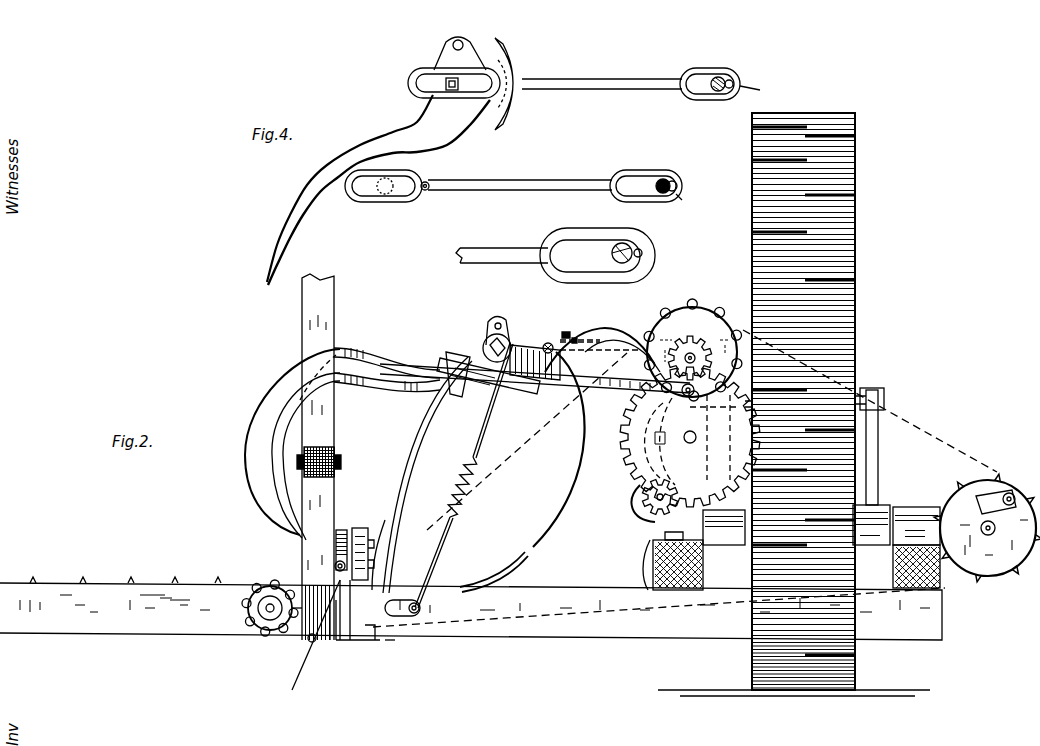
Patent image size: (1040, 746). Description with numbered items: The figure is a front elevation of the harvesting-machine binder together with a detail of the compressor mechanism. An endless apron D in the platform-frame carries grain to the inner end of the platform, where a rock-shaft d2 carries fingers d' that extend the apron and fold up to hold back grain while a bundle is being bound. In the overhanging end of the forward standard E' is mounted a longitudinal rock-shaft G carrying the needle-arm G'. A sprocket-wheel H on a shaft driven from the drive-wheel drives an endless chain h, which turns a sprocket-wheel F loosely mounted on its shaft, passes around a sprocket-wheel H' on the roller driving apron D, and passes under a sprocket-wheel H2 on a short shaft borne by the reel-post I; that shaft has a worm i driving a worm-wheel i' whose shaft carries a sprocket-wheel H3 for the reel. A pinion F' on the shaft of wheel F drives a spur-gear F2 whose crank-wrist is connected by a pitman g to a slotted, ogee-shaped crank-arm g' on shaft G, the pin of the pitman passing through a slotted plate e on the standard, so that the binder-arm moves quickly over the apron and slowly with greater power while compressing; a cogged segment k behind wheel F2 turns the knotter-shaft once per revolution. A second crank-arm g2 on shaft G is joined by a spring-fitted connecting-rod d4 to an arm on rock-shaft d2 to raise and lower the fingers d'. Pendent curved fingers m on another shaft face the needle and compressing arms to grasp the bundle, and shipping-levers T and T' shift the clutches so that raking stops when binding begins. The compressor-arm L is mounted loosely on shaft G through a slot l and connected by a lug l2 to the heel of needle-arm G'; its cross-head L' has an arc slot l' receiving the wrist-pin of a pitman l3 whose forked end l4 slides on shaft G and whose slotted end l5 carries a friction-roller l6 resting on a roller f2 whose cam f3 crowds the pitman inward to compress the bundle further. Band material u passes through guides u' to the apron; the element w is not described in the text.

In FIG. 4, the compressor-arm L is at (378, 190).
In FIG. 4, the slot l is at (454, 67).
In FIG. 4, the lug or ear l2 is at (458, 38).
In FIG. 4, the vertical cross-head L' is at (517, 84).
In FIG. 4, the slot l' is at (517, 96).
In FIG. 4, the pitman l3 is at (584, 167).
In FIG. 4, the forked or slotted end l4 is at (394, 180).
In FIG. 4, the slotted end l5 is at (707, 80).
In FIG. 4, the friction-roller l6 is at (652, 258).
In FIG. 4, the roller f2 is at (672, 180).
In FIG. 4, the cam f3 is at (676, 194).
In FIG. 2, the endless apron D is at (135, 583).
In FIG. 2, the reel-post I is at (324, 457).
In FIG. 2, the needle-arm G' is at (342, 444).
In FIG. 2, the longitudinal shaft G is at (477, 339).
In FIG. 2, the pitman g is at (537, 390).
In FIG. 2, the slotted crank-arm g' is at (488, 384).
In FIG. 2, the second crank-arm g2 is at (519, 345).
In FIG. 2, the slotted plate e is at (455, 475).
In FIG. 2, the shipping-lever T is at (382, 535).
In FIG. 2, the shipping-lever T' is at (580, 316).
In FIG. 2, the forward standard E' is at (602, 338).
In FIG. 2, the pendent curved fingers m is at (559, 430).
In FIG. 2, the connecting-rod d4 is at (521, 475).
In FIG. 2, the fingers d' is at (494, 572).
In FIG. 2, the rock-shaft d2 is at (400, 616).
In FIG. 2, the sprocket-wheel H3 is at (360, 549).
In FIG. 2, the worm-wheel i' is at (343, 532).
In FIG. 2, the worm or screw i is at (322, 633).
In FIG. 2, the sprocket-wheel H2 is at (350, 600).
In FIG. 2, the band material u is at (369, 639).
In FIG. 2, the guides u' is at (390, 656).
In FIG. 2, the rod w is at (315, 648).
In FIG. 2, the sprocket-wheel H' is at (272, 624).
In FIG. 2, the sprocket-wheel F is at (693, 350).
In FIG. 2, the pinion F' is at (697, 358).
In FIG. 2, the spur-gear F2 is at (697, 437).
In FIG. 2, the cogged segment k is at (648, 508).
In FIG. 2, the endless chain h is at (870, 401).
In FIG. 2, the sprocket-wheel H is at (987, 519).